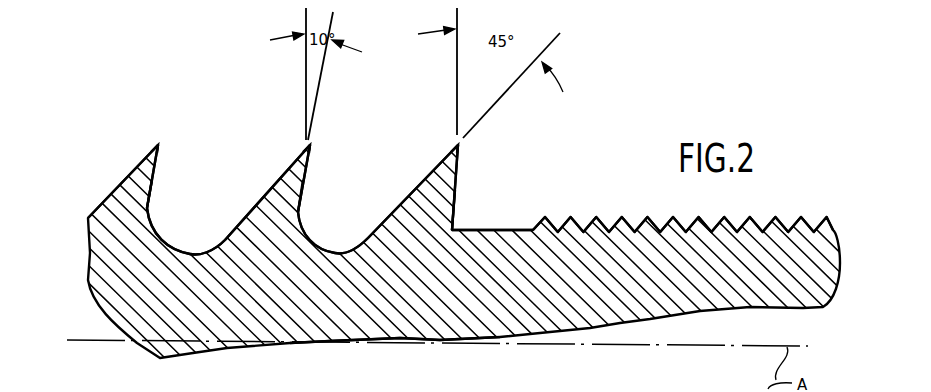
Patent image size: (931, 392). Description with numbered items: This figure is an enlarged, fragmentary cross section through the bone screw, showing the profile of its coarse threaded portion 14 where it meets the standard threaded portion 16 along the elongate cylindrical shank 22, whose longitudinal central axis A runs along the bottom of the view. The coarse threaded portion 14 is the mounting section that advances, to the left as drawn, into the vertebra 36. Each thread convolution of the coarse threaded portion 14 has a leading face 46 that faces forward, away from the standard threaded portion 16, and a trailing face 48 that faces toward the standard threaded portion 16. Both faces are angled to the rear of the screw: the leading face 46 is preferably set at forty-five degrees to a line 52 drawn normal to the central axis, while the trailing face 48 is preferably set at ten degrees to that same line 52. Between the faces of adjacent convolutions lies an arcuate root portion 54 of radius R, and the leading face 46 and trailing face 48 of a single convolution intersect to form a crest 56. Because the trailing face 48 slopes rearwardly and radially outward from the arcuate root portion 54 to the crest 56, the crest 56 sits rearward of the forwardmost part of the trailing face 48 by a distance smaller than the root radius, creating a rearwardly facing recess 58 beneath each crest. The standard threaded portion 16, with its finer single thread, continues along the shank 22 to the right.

The coarse threaded portion 14 is at (135, 147).
The standard threaded portion 16 is at (790, 213).
The shank 22 is at (507, 229).
The vertebra 36 is at (395, 364).
The leading face 46 is at (123, 181).
The trailing face 48 is at (152, 176).
The line normal to the longitudinal central axis 52 is at (305, 74).
The arcuate root portion 54 is at (188, 252).
The crest 56 is at (158, 145).
The rearwardly facing recess 58 is at (155, 202).